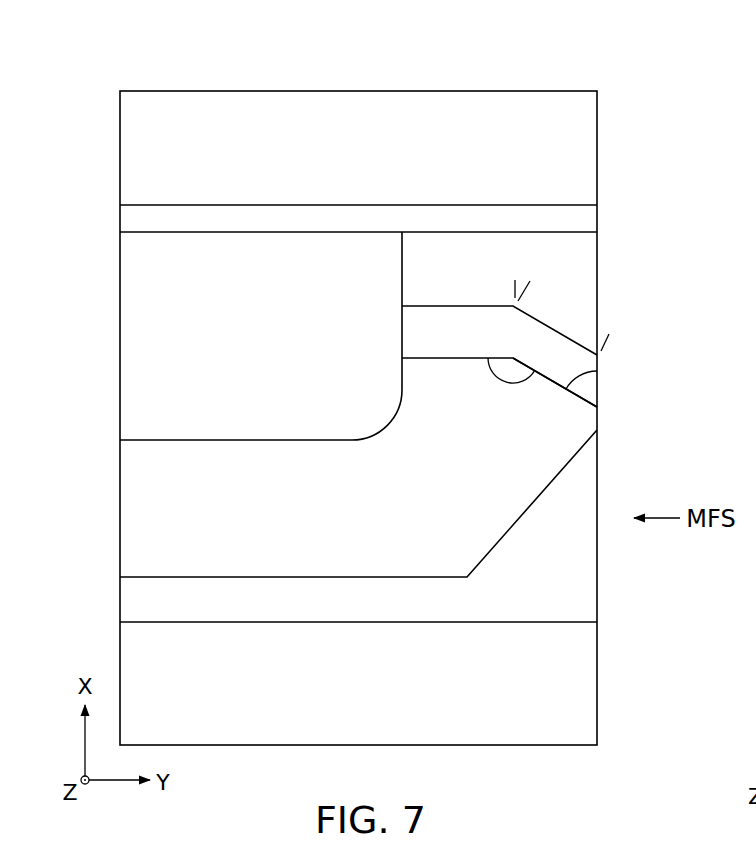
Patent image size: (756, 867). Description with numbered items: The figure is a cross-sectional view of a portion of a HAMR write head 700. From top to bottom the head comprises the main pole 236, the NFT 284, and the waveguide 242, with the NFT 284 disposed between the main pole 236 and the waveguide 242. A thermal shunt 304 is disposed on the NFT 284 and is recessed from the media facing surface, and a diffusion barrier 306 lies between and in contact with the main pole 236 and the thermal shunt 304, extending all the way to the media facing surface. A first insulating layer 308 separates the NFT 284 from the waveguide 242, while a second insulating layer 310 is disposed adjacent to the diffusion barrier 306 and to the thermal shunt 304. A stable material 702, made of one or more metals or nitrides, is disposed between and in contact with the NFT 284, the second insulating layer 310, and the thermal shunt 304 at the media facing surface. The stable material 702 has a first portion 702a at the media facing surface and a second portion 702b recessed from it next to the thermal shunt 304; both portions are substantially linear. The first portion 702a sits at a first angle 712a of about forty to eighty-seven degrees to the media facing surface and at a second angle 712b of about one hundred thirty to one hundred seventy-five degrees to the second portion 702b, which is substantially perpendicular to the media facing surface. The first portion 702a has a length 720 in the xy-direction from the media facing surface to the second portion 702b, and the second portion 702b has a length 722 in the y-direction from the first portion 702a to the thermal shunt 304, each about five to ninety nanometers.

The HAMR write head 700 is at (160, 52).
The main pole 236 is at (279, 160).
The diffusion barrier 306 is at (583, 220).
The second insulating layer 310 is at (505, 267).
The thermal shunt 304 is at (195, 357).
The length of second portion 722 is at (514, 288).
The length of first portion 720 is at (600, 334).
The stable material 702 is at (477, 345).
The first portion 702a is at (555, 376).
The second portion 702b is at (457, 332).
The first angle 712a is at (583, 375).
The second angle 712b is at (492, 373).
The NFT 284 is at (302, 504).
The first insulating layer 308 is at (520, 604).
The waveguide 242 is at (299, 712).